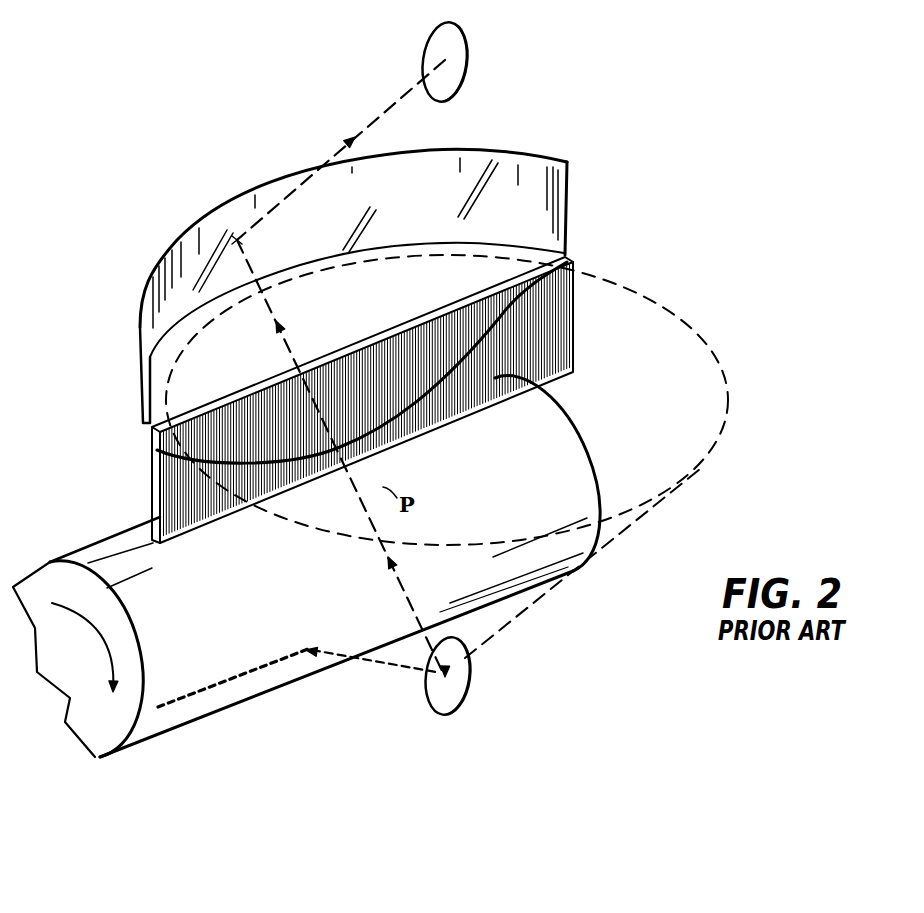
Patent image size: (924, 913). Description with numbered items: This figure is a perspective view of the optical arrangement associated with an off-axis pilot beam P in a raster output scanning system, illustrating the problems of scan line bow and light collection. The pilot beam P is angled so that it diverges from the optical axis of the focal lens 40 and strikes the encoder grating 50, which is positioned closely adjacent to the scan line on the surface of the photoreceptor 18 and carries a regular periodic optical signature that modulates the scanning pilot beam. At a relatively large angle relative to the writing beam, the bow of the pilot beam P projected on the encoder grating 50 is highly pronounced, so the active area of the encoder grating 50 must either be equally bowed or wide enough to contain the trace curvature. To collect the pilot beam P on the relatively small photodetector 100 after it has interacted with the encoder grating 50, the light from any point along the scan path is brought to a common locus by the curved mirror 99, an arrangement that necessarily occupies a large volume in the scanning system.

The photoreceptor 18 is at (110, 535).
The focal lens 40 is at (470, 696).
The encoder grating 50 is at (573, 317).
The curved mirror 99 is at (508, 152).
The photodetector 100 is at (460, 43).